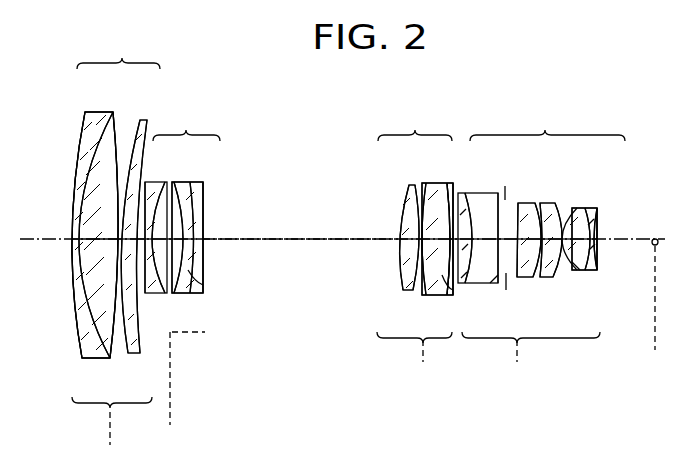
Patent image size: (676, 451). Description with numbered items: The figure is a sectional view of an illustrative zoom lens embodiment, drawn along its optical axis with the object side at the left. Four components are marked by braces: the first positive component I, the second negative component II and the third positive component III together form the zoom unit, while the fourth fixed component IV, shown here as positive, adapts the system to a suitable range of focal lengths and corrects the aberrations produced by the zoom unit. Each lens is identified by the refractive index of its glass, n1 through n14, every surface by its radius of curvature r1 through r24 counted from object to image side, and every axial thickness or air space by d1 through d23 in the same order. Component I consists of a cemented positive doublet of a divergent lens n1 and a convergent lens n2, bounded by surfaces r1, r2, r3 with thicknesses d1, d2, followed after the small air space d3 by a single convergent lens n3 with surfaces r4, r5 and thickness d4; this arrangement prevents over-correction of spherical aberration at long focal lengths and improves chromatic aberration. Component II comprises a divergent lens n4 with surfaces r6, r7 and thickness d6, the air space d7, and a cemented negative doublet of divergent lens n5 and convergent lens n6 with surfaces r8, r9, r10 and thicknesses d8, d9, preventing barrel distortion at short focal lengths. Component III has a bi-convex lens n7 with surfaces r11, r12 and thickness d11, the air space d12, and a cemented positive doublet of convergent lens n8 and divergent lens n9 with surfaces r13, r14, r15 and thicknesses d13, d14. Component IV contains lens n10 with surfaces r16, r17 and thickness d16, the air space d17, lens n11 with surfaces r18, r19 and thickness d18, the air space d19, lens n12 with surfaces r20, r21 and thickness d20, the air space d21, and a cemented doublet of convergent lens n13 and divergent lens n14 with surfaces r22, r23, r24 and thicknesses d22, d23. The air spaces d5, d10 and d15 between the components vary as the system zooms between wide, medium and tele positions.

The first positive component I is at (118, 51).
The second negative component II is at (186, 123).
The third positive component III is at (415, 123).
The fourth fixed component IV is at (547, 123).
The refractive index of first lens glass material n1 is at (93, 112).
The refractive index of second lens glass material n2 is at (116, 112).
The refractive index of third lens glass material n3 is at (145, 120).
The refractive index of fourth lens glass material n4 is at (160, 182).
The refractive index of fifth lens glass material n5 is at (183, 182).
The refractive index of sixth lens glass material n6 is at (200, 182).
The refractive index of seventh lens glass material n7 is at (408, 185).
The refractive index of eighth lens glass material n8 is at (430, 183).
The refractive index of ninth lens glass material n9 is at (448, 183).
The refractive index of tenth lens glass material n10 is at (468, 193).
The refractive index of eleventh lens glass material n11 is at (522, 203).
The refractive index of twelfth lens glass material n12 is at (548, 203).
The refractive index of thirteenth lens glass material n13 is at (578, 208).
The refractive index of fourteenth lens glass material n14 is at (590, 208).
The lens thickness d1 is at (73, 239).
The lens thickness d2 is at (119, 239).
The air space d3 is at (117, 238).
The lens thickness d4 is at (122, 240).
The air space d5 is at (137, 242).
The lens thickness d6 is at (148, 240).
The air space d7 is at (162, 229).
The lens thickness d8 is at (183, 242).
The lens thickness d9 is at (183, 238).
The air space d10 is at (301, 229).
The lens thickness d11 is at (401, 238).
The air space d12 is at (401, 240).
The lens thickness d13 is at (450, 239).
The lens thickness d14 is at (450, 240).
The air space d15 is at (499, 240).
The lens thickness d16 is at (472, 239).
The air space d17 is at (498, 239).
The lens thickness d18 is at (505, 186).
The air space d19 is at (543, 203).
The lens thickness d20 is at (570, 210).
The air space d21 is at (585, 230).
The lens thickness d22 is at (595, 235).
The lens thickness d23 is at (594, 248).
The radius of curvature r1 is at (78, 355).
The radius of curvature r2 is at (93, 358).
The radius of curvature r3 is at (110, 358).
The radius of curvature r4 is at (129, 353).
The radius of curvature r5 is at (141, 353).
The radius of curvature r6 is at (150, 293).
The radius of curvature r7 is at (165, 293).
The radius of curvature r8 is at (180, 293).
The radius of curvature r9 is at (203, 293).
The radius of curvature r10 is at (203, 265).
The radius of curvature r11 is at (403, 292).
The radius of curvature r12 is at (406, 292).
The radius of curvature r13 is at (420, 292).
The radius of curvature r14 is at (440, 295).
The radius of curvature r15 is at (450, 295).
The radius of curvature r16 is at (465, 283).
The radius of curvature r17 is at (490, 283).
The radius of curvature r18 is at (518, 277).
The radius of curvature r19 is at (533, 277).
The radius of curvature r20 is at (545, 277).
The radius of curvature r21 is at (560, 277).
The radius of curvature r22 is at (585, 270).
The radius of curvature r23 is at (597, 270).
The radius of curvature r24 is at (600, 265).